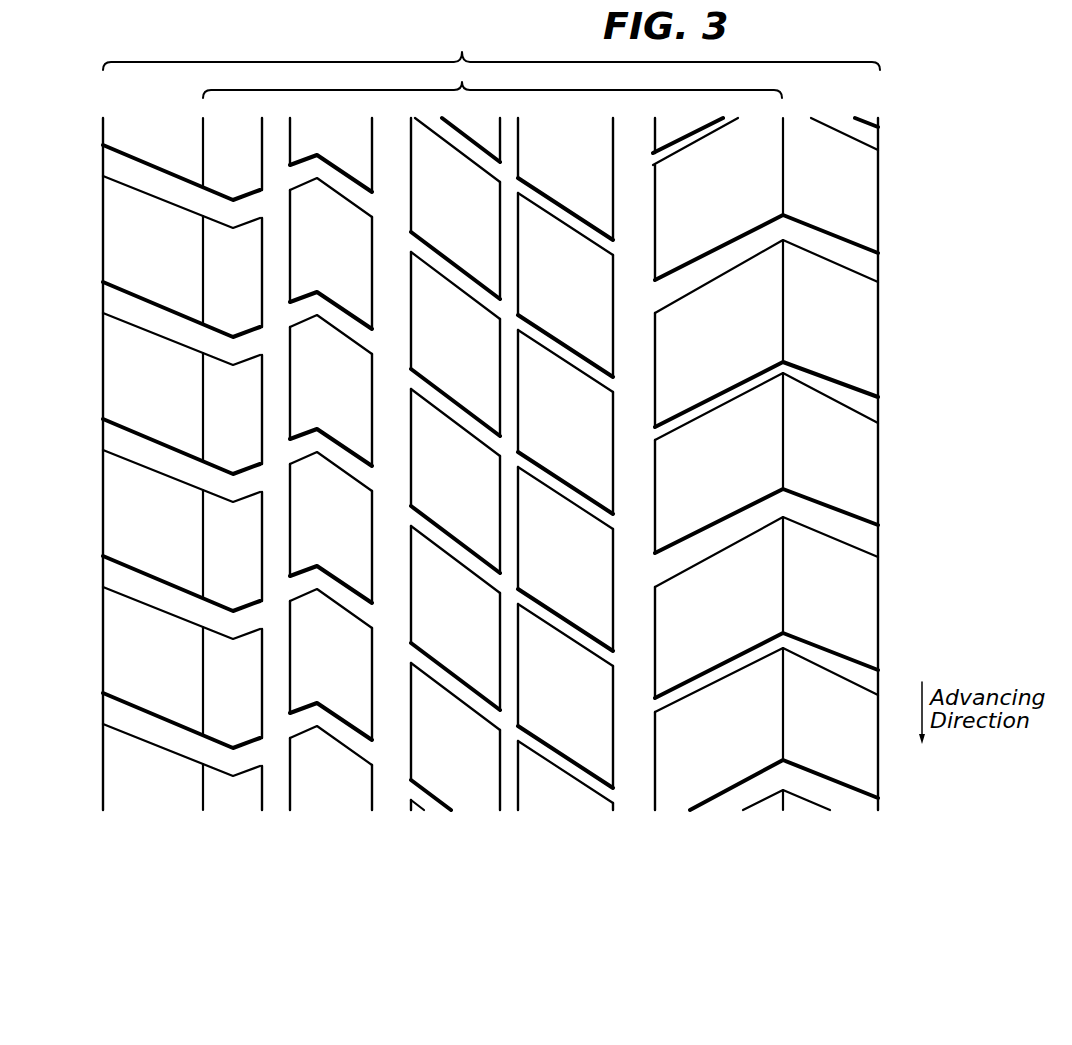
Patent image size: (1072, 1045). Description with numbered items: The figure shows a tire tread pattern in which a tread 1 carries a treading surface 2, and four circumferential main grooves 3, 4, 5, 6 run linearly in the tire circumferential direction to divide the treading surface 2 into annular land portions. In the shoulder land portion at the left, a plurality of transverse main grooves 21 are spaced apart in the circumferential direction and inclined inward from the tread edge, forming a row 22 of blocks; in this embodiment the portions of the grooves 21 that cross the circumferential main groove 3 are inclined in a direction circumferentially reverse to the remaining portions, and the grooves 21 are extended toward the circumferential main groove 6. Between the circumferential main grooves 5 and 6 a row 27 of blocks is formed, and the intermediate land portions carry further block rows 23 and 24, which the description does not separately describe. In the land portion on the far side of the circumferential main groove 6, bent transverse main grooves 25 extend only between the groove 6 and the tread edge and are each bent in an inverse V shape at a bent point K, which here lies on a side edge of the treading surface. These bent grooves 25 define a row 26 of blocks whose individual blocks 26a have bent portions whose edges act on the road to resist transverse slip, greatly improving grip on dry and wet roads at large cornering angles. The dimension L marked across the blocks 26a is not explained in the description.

The tread 1 is at (491, 46).
The treading surface 2 is at (492, 78).
The circumferential main groove 3 is at (278, 806).
The circumferential main groove 4 is at (393, 806).
The circumferential main groove 5 is at (510, 806).
The circumferential main groove 6 is at (634, 806).
The transverse main groove 21 is at (103, 307).
The row of blocks 22 is at (235, 808).
The blocks 23 is at (332, 808).
The blocks 24 is at (462, 808).
The bent transverse main groove 25 is at (748, 537).
The row of blocks 26 is at (724, 808).
The block 26a is at (753, 621).
The row of blocks 27 is at (572, 808).
The bent point K is at (794, 222).
The length L is at (776, 465).